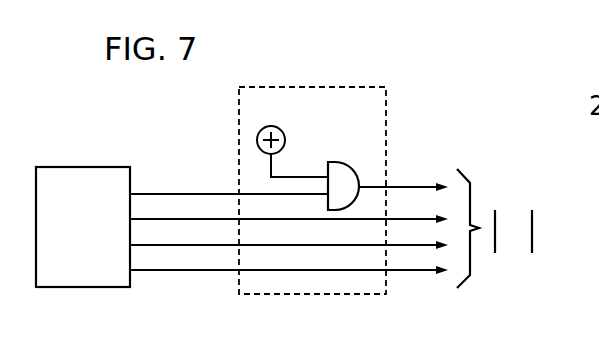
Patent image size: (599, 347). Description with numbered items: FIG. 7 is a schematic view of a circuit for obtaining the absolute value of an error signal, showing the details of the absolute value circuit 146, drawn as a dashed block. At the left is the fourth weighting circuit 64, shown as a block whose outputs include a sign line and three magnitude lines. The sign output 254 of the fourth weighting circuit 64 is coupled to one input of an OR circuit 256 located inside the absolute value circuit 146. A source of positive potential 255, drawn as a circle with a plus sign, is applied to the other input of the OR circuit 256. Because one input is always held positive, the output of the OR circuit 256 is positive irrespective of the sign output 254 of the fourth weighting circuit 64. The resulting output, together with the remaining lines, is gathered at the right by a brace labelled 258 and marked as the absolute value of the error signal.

The fourth weighting circuit 64 is at (107, 167).
The absolute value circuit 146 is at (307, 85).
The sign output 254 is at (224, 193).
The source of positive potential 255 is at (258, 133).
The OR circuit 256 is at (349, 164).
The error output |E| 258 is at (412, 188).